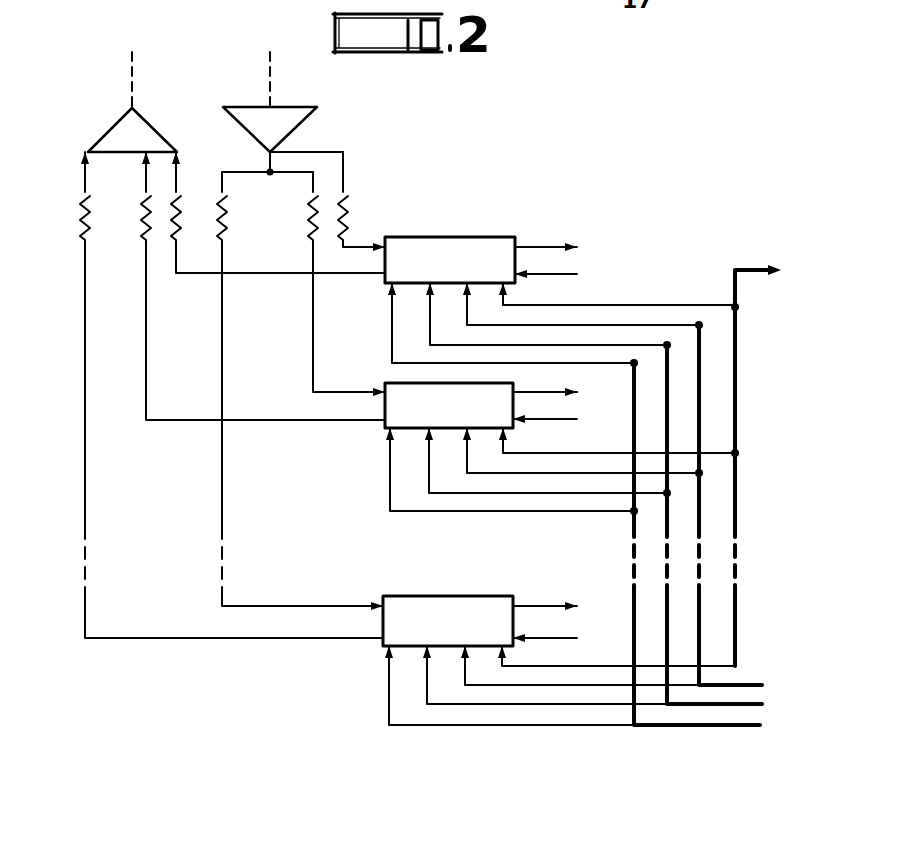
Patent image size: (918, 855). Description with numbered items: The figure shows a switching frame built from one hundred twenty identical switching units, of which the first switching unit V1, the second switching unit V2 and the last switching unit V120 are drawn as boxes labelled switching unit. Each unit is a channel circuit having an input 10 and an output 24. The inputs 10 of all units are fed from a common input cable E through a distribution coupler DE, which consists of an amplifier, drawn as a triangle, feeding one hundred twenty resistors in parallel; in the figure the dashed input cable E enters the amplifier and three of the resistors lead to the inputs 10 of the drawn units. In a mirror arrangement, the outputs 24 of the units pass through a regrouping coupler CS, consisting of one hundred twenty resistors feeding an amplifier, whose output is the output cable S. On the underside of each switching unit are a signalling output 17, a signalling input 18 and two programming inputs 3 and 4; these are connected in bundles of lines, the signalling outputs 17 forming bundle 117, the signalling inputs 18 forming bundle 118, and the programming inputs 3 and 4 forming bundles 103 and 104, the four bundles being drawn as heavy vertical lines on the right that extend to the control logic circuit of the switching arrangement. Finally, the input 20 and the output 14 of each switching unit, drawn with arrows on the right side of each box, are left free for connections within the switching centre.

The regrouping coupler CS is at (116, 126).
The output cable S is at (134, 96).
The input cable E is at (268, 90).
The distribution coupler DE is at (300, 128).
The input 10 is at (365, 240).
The output 24 is at (360, 276).
The first switching unit V1 is at (442, 236).
The second switching unit V2 is at (400, 382).
The last switching unit V120 is at (472, 594).
The output 14 is at (538, 232).
The input 20 is at (544, 284).
The signalling output 17 is at (503, 302).
The signalling input 18 is at (467, 296).
The programming input 4 is at (430, 298).
The programming input 3 is at (392, 300).
The bundle of lines 117 is at (756, 272).
The bundle of lines 118 is at (752, 680).
The bundle of lines 104 is at (752, 700).
The bundle of lines 103 is at (752, 722).